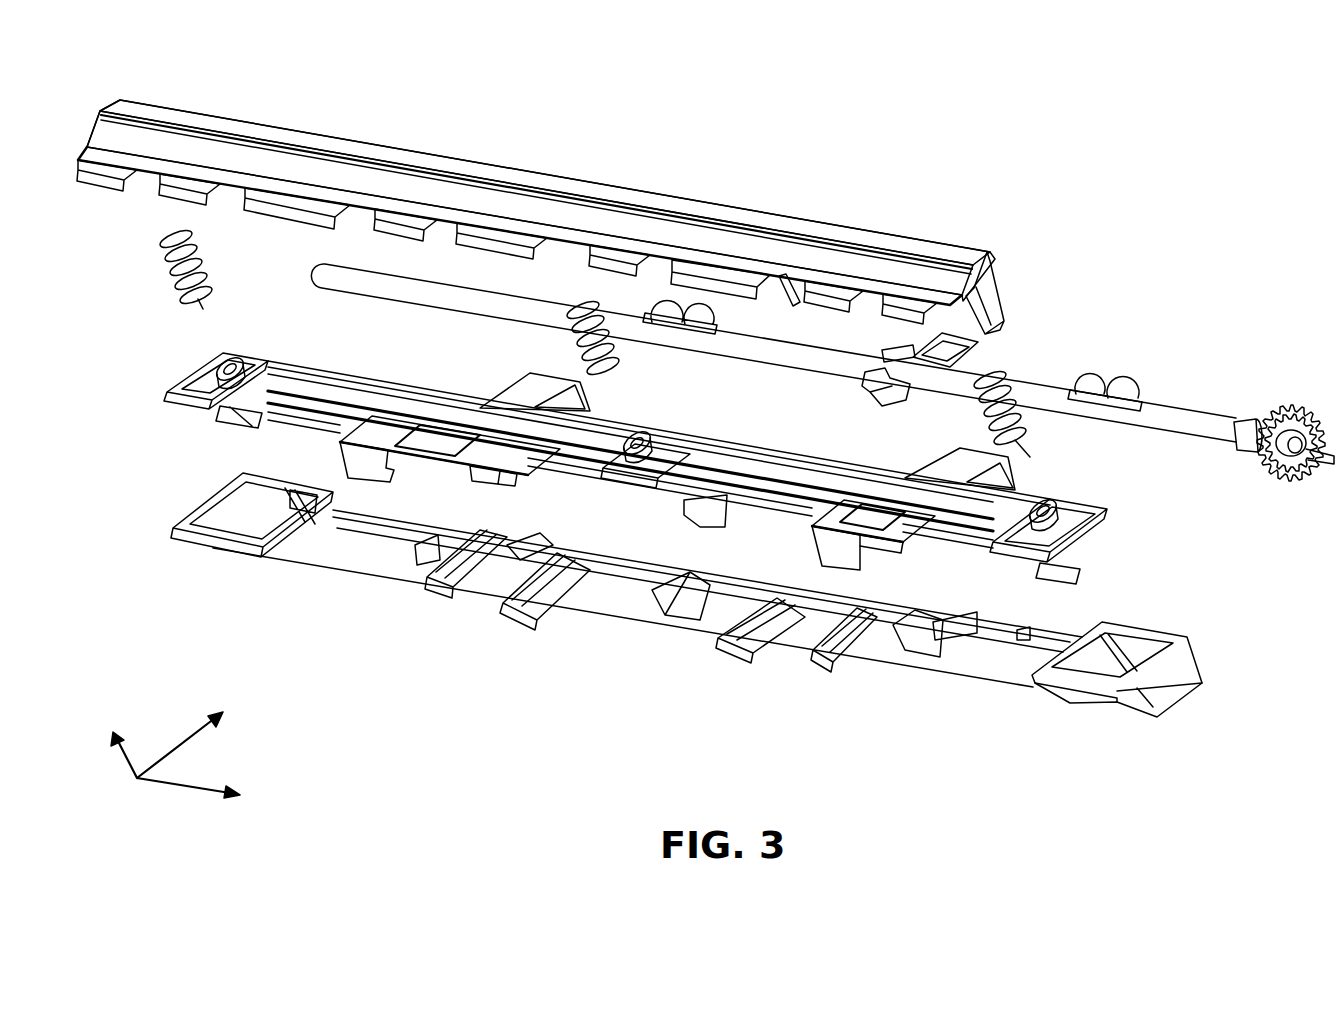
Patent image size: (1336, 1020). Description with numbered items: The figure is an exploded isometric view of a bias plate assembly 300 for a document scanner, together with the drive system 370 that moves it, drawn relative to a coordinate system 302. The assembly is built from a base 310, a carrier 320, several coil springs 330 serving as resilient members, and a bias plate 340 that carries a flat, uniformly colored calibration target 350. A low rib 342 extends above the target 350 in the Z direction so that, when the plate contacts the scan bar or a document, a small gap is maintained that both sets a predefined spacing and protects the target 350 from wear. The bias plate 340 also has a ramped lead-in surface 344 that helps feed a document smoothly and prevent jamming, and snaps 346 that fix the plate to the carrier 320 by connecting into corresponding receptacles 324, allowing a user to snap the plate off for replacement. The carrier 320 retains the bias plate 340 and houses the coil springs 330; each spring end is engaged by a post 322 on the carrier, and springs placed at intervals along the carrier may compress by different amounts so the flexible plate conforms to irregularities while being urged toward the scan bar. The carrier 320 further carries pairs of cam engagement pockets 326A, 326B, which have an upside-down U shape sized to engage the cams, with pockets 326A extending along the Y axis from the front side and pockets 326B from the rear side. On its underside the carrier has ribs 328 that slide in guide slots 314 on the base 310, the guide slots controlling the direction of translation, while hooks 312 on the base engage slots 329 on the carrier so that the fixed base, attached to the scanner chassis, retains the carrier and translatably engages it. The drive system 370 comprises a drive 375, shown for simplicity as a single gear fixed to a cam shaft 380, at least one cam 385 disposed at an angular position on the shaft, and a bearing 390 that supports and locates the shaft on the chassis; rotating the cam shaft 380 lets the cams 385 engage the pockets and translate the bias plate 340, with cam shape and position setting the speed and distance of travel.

The bias plate assembly 300 is at (1213, 587).
The coordinate system 302 is at (200, 787).
The base 310 is at (340, 567).
The hook 312 is at (470, 563).
The guide slot 314 is at (523, 607).
The carrier 320 is at (283, 362).
The post 322 is at (230, 380).
The receptacle 324 is at (207, 388).
The cam engagement pocket 326A is at (360, 455).
The cam engagement pocket 326B is at (533, 390).
The rib 328 is at (490, 484).
The slot 329 is at (423, 442).
The coil spring 330 is at (205, 272).
The bias plate 340 is at (422, 152).
The rib 342 is at (747, 230).
The ramped lead-in surface 344 is at (558, 217).
The snap 346 is at (985, 297).
The calibration target 350 is at (487, 173).
The drive system 370 is at (1217, 470).
The drive 375 is at (1289, 407).
The cam shaft 380 is at (323, 278).
The cam 385 is at (715, 311).
The bearing 390 is at (960, 360).